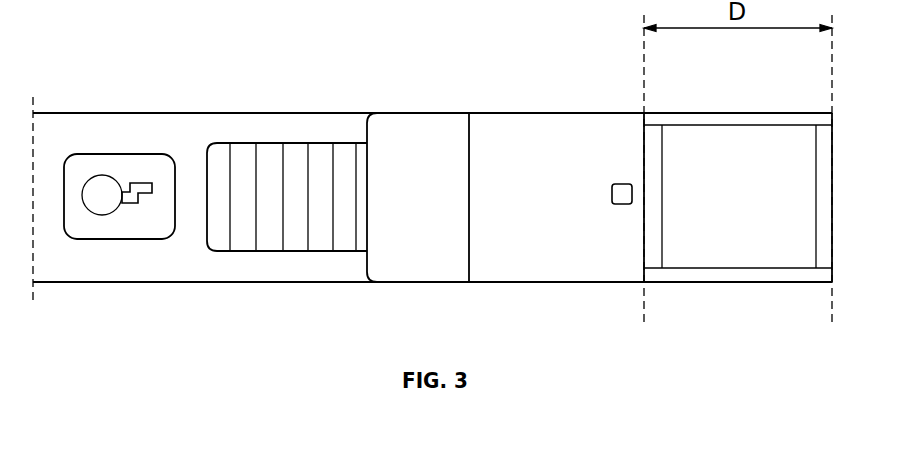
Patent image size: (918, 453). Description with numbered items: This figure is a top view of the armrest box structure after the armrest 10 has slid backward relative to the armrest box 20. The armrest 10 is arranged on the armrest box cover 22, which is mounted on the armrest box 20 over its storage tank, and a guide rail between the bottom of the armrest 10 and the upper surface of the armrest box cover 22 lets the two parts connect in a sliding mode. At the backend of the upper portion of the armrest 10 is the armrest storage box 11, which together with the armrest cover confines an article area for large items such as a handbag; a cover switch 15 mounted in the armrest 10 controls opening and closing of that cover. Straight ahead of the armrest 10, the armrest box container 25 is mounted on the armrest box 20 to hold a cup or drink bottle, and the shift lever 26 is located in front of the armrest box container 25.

The armrest 10 is at (518, 152).
The armrest storage box 11 is at (733, 243).
The cover switch 15 is at (622, 192).
The armrest box 20 is at (173, 135).
The armrest box cover 22 is at (417, 155).
The armrest box container 25 is at (245, 173).
The shift lever 26 is at (102, 197).